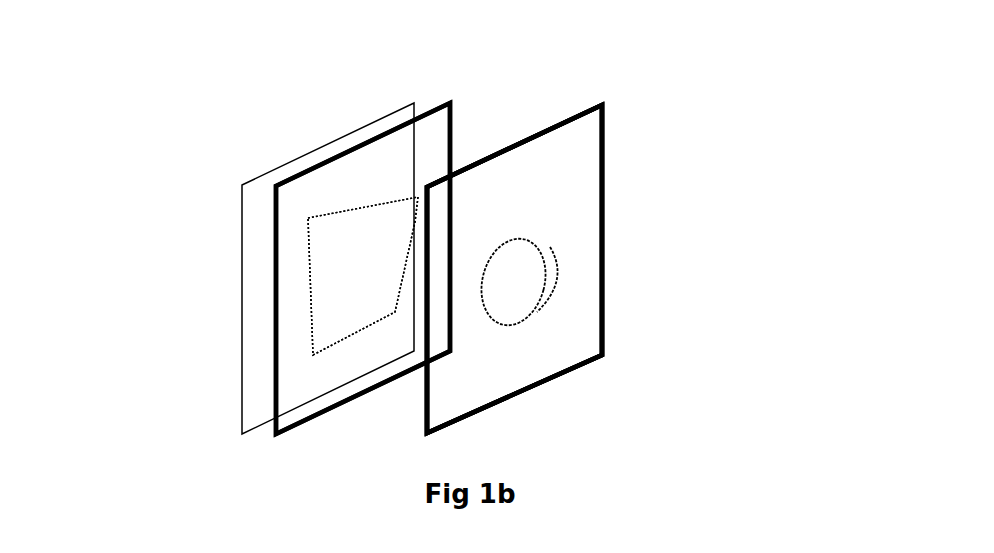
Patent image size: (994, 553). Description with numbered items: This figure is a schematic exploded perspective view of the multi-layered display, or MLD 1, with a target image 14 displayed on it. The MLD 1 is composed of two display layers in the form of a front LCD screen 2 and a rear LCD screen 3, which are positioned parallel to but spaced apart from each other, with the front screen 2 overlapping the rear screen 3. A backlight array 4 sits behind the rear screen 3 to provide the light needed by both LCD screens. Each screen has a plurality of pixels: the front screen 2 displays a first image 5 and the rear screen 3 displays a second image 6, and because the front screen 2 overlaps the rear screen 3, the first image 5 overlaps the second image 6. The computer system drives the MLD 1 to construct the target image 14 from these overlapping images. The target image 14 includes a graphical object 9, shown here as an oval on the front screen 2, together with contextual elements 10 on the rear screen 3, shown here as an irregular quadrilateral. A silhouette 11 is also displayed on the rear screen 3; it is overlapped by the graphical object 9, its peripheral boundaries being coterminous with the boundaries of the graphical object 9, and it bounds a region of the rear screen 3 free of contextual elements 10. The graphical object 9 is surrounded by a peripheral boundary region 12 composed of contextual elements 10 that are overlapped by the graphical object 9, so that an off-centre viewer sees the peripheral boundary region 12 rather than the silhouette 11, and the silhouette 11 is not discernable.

The MLD 1 is at (703, 92).
The front LCD screen 2 is at (512, 398).
The rear LCD screen 3 is at (308, 418).
The backlight array 4 is at (240, 352).
The first image 5 is at (584, 251).
The second image 6 is at (368, 174).
The graphical object 9 is at (521, 265).
The contextual elements 10 is at (325, 218).
The silhouette 11 is at (362, 264).
The peripheral boundary region 12 is at (537, 313).
The target image 14 is at (647, 283).